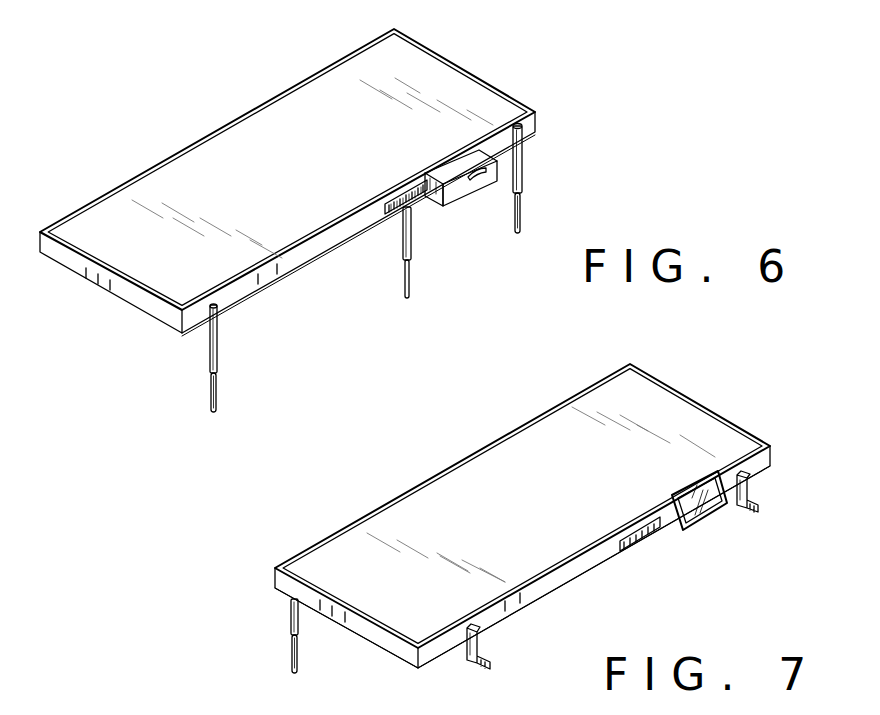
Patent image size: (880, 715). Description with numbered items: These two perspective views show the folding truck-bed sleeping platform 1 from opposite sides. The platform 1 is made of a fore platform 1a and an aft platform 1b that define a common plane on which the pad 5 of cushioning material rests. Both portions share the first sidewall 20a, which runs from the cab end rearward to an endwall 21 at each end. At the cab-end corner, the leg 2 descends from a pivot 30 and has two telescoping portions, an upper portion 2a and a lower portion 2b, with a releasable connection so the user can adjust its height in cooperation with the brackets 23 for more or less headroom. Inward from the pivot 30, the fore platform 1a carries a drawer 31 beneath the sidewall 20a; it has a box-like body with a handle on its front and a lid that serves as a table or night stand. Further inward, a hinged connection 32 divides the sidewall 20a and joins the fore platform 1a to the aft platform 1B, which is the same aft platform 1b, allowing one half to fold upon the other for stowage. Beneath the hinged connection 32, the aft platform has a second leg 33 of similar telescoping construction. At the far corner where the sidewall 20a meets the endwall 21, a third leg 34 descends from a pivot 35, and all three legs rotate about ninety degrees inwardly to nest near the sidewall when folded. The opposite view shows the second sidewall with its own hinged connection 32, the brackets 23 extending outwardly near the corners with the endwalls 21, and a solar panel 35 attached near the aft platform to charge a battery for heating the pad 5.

In FIG. 7, the platform 1 is at (377, 644).
In FIG. 6, the fore platform 1a is at (462, 68).
In FIG. 7, the fore platform 1a is at (447, 457).
In FIG. 7, the aft platform 1b is at (447, 457).
In FIG. 6, the second table top section 1B is at (275, 282).
In FIG. 6, the leg 2 is at (550, 179).
In FIG. 7, the leg 2 is at (292, 638).
In FIG. 6, the upper leg portion 2a is at (518, 158).
In FIG. 6, the lower leg portion 2b is at (518, 209).
In FIG. 6, the pad 5 is at (352, 90).
In FIG. 7, the pad 5 is at (653, 415).
In FIG. 6, the first sidewall 20a is at (308, 256).
In FIG. 6, the endwall 21 is at (108, 282).
In FIG. 7, the endwall 21 is at (298, 588).
In FIG. 7, the bracket 23 is at (762, 503).
In FIG. 6, the pivot 30 is at (536, 118).
In FIG. 6, the drawer 31 is at (490, 156).
In FIG. 6, the hinged connection 32 is at (387, 215).
In FIG. 7, the hinged connection 32 is at (633, 545).
In FIG. 6, the second leg 33 is at (412, 256).
In FIG. 6, the third leg 34 is at (210, 392).
In FIG. 6, the pivot 35 is at (205, 330).
In FIG. 7, the pivot 35 is at (700, 513).